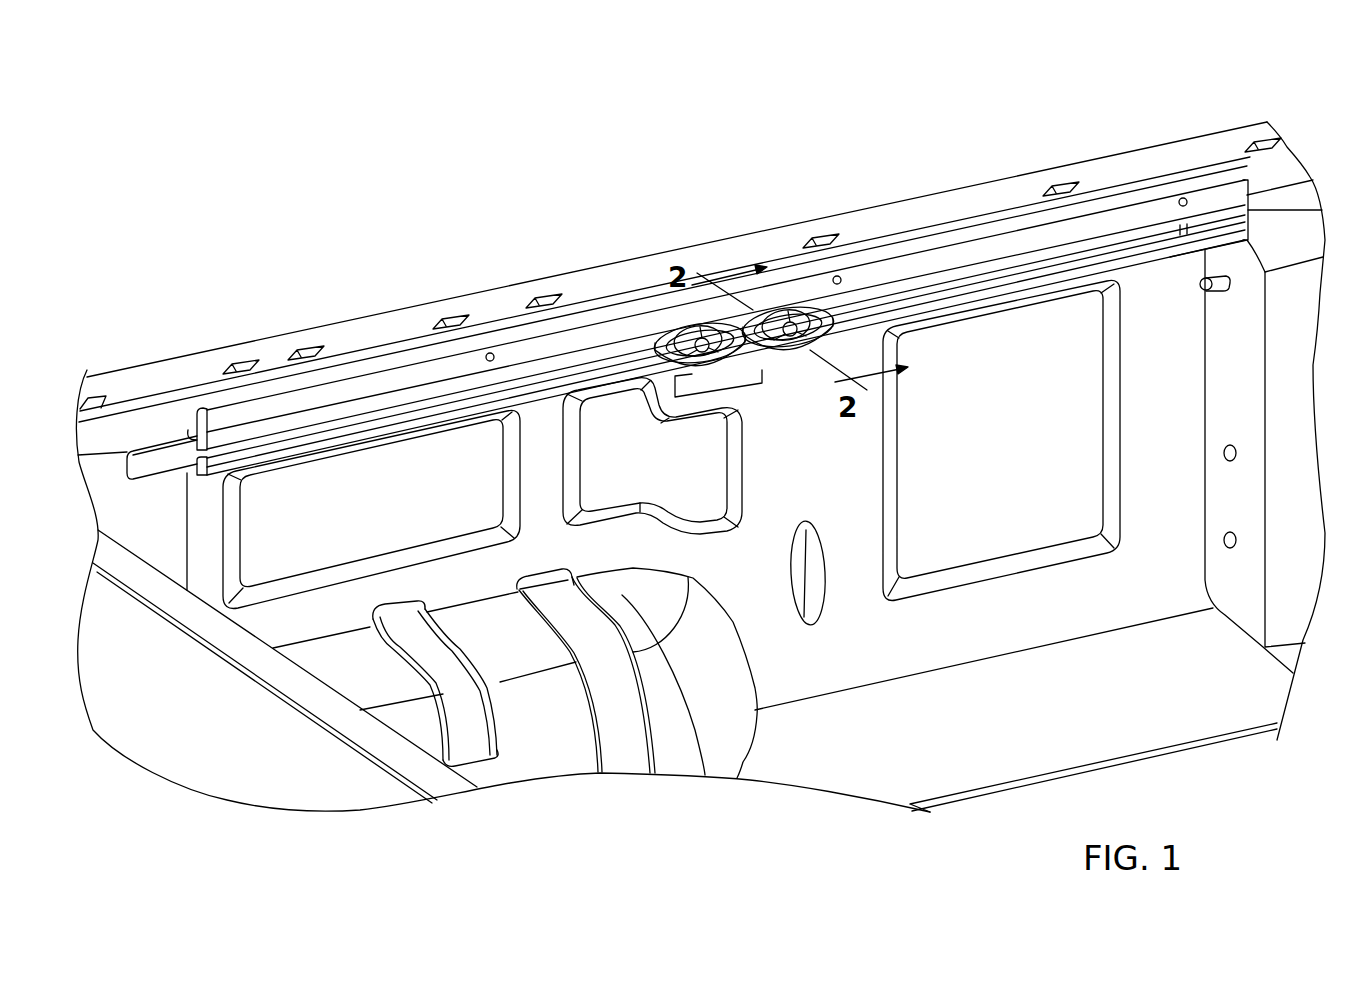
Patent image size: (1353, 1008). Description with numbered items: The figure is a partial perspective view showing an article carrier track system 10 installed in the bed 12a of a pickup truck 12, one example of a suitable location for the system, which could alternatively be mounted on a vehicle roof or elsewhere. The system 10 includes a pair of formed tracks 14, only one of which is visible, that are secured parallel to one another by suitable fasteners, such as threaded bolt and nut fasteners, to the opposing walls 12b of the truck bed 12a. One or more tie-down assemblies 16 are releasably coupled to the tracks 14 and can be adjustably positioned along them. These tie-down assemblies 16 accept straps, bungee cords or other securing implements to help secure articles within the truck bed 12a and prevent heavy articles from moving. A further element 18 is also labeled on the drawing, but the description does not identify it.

The article carrier track system 10 is at (687, 303).
The pickup truck 12 is at (700, 430).
The bed 12a is at (325, 513).
The walls 12b is at (376, 346).
The formed tracks 14 is at (957, 315).
The tie-down assemblies 16 is at (790, 365).
The upper track 18 is at (593, 340).